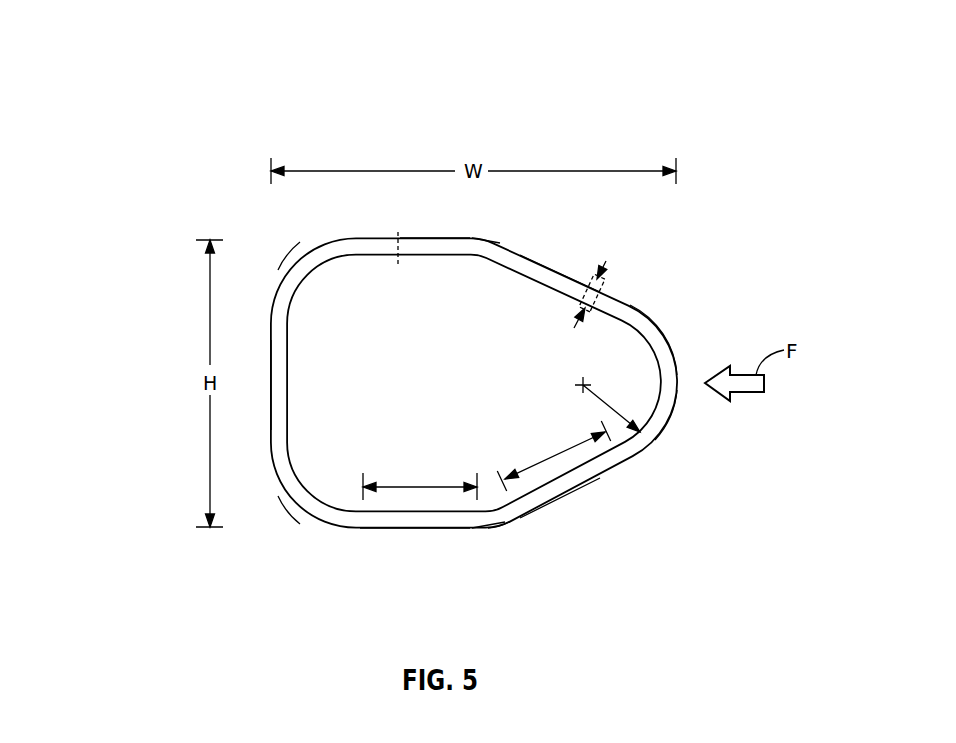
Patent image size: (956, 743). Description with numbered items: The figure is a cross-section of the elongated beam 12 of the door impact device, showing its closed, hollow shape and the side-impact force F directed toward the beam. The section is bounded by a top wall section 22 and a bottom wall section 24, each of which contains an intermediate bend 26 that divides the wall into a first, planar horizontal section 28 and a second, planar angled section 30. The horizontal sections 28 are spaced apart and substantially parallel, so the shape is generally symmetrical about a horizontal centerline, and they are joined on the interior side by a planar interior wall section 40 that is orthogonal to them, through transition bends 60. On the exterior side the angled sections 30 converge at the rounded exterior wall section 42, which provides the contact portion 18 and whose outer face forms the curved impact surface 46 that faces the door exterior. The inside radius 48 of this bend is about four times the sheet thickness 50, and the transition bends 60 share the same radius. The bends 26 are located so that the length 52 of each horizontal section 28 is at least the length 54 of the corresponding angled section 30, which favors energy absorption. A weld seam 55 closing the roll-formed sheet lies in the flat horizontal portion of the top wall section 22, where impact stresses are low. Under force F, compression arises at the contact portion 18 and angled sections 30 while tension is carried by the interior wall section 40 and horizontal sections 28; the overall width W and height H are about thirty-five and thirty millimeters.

The elongated beam 12 is at (393, 301).
The contact portion 18 is at (712, 337).
The top wall section 22 is at (418, 203).
The bottom wall section 24 is at (493, 576).
The intermediate bend 26 is at (496, 240).
The first section 28 is at (430, 240).
The second section 30 is at (560, 268).
The interior wall section 40 is at (272, 364).
The exterior wall section 42 is at (657, 358).
The curved impact surface 46 is at (673, 408).
The inside radius 48 is at (597, 402).
The thickness 50 is at (604, 262).
The length of the horizontal section 52 is at (430, 482).
The length of the angled section 54 is at (552, 455).
The weld seam 55 is at (408, 255).
The transition bend 60 is at (303, 262).